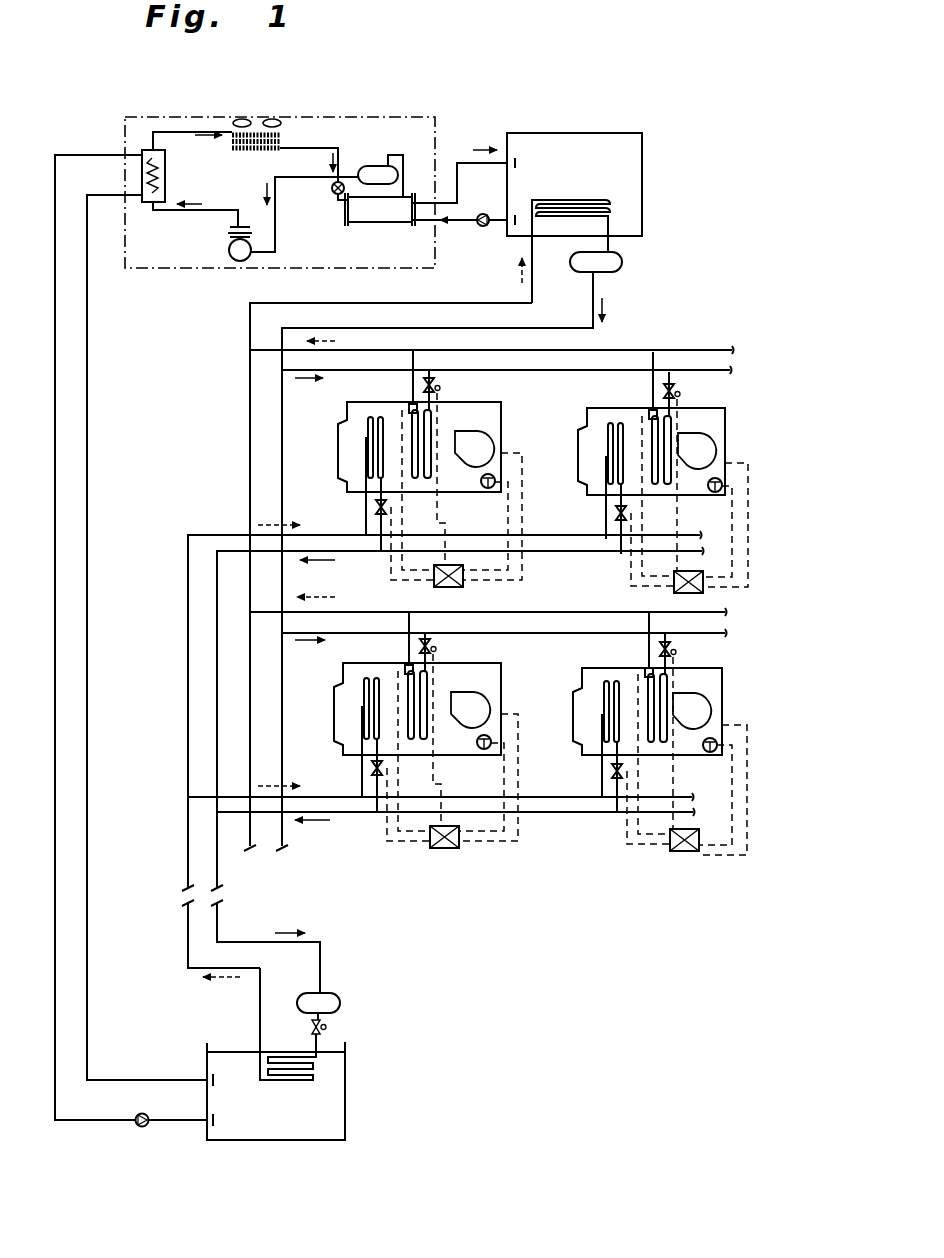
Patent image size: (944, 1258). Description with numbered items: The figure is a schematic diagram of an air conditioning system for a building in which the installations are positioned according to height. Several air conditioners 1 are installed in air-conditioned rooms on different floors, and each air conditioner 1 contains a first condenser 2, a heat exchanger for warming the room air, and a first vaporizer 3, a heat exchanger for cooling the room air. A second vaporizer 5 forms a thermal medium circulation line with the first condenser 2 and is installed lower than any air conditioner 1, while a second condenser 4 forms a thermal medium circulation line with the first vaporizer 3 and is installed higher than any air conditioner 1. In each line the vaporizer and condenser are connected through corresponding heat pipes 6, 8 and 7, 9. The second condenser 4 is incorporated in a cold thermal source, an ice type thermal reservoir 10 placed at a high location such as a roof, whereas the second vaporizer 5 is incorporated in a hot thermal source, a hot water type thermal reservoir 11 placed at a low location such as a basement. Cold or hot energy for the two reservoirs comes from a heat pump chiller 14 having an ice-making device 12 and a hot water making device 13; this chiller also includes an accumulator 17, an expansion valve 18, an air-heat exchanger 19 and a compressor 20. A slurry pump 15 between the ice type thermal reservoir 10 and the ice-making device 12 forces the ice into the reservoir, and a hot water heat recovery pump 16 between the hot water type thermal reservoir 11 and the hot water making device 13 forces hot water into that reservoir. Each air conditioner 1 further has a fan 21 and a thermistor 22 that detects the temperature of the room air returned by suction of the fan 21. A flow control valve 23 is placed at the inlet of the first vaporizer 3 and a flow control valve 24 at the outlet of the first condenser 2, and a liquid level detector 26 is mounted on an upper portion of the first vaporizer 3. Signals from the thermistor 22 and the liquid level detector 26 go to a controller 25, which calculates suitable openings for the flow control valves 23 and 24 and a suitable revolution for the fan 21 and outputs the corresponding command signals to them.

The air conditioner 1 is at (497, 412).
The first condenser 2 is at (366, 437).
The first vaporizer 3 is at (431, 465).
The second condenser 4 is at (608, 205).
The second vaporizer 5 is at (314, 1062).
The heat pipe 6 is at (575, 552).
The heat pipe 7 is at (525, 328).
The heat pipe 8 is at (557, 536).
The heat pipe 9 is at (620, 350).
The ice type thermal reservoir 10 is at (625, 165).
The hot water type thermal reservoir 11 is at (337, 1120).
The ice-making device 12 is at (400, 223).
The hot water making device 13 is at (164, 172).
The heat pump chiller 14 is at (365, 116).
The slurry pump 15 is at (483, 227).
The hot water heat recovery pump 16 is at (143, 1127).
The accumulator 17 is at (380, 166).
The expansion valve 18 is at (333, 193).
The air-heat exchanger 19 is at (252, 151).
The compressor 20 is at (238, 259).
The fan 21 is at (490, 446).
The thermistor 22 is at (488, 489).
The flow control valve 23 is at (441, 388).
The flow control valve 24 is at (388, 507).
The controller 25 is at (452, 588).
The liquid level detector 26 is at (408, 404).